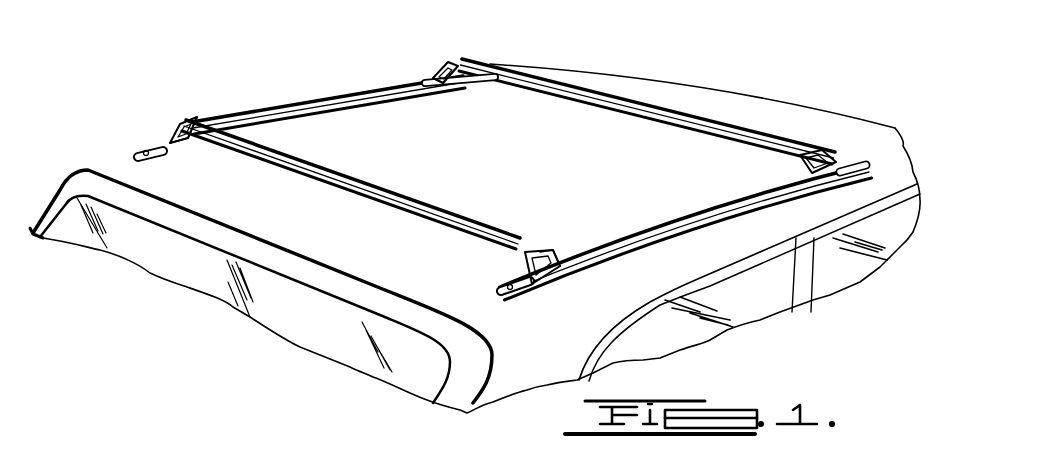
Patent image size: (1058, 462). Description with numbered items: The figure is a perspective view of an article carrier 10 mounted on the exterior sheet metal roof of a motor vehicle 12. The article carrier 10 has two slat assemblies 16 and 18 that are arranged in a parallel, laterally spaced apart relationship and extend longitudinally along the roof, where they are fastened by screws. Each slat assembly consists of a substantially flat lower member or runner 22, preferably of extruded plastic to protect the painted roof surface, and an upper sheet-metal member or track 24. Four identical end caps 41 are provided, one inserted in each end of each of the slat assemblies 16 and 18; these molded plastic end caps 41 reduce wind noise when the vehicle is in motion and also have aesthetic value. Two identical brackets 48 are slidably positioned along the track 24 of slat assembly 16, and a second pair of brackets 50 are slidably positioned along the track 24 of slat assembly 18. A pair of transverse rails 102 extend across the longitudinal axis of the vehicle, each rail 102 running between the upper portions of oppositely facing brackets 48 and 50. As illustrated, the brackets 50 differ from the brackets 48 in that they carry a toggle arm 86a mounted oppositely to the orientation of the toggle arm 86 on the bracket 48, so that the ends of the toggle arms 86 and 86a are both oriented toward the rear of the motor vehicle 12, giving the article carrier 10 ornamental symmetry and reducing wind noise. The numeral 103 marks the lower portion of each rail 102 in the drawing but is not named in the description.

The article carrier 10 is at (535, 53).
The motor vehicle 12 is at (766, 108).
The slat assembly 16 is at (717, 202).
The slat assembly 18 is at (310, 102).
The runner 22 is at (319, 122).
The track 24 is at (390, 99).
The end cap 41 is at (154, 158).
The bracket 48 is at (838, 150).
The bracket 50 is at (203, 137).
The toggle arm 86 is at (526, 261).
The toggle arm 86a is at (182, 122).
The transverse rail 102 is at (612, 90).
The cross bar lower member 103 is at (650, 112).